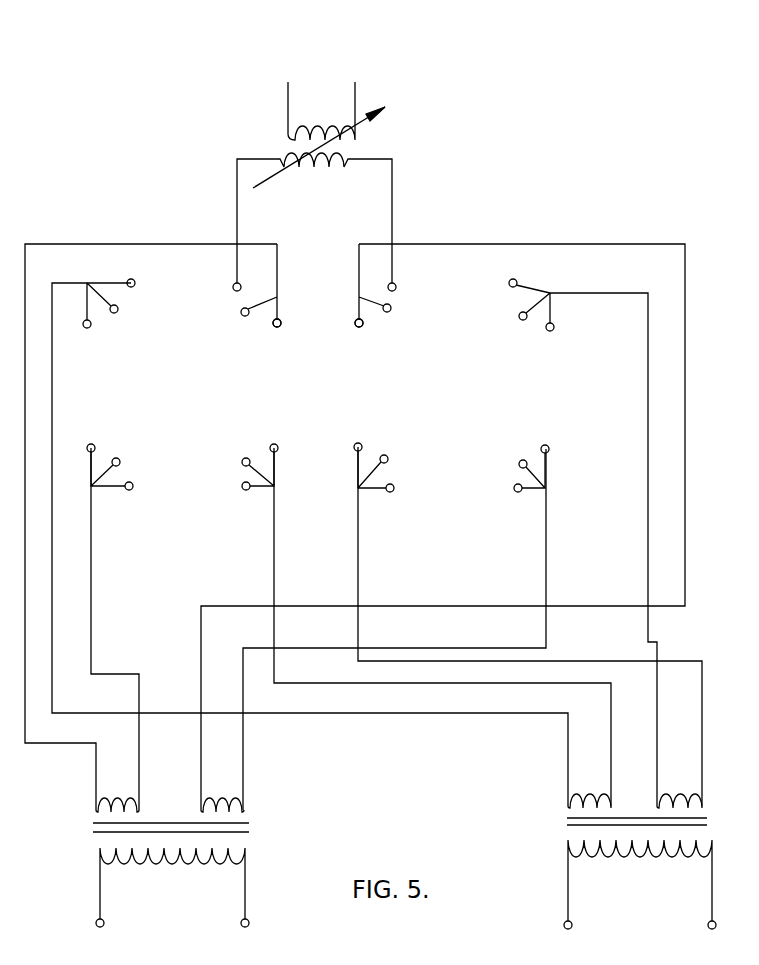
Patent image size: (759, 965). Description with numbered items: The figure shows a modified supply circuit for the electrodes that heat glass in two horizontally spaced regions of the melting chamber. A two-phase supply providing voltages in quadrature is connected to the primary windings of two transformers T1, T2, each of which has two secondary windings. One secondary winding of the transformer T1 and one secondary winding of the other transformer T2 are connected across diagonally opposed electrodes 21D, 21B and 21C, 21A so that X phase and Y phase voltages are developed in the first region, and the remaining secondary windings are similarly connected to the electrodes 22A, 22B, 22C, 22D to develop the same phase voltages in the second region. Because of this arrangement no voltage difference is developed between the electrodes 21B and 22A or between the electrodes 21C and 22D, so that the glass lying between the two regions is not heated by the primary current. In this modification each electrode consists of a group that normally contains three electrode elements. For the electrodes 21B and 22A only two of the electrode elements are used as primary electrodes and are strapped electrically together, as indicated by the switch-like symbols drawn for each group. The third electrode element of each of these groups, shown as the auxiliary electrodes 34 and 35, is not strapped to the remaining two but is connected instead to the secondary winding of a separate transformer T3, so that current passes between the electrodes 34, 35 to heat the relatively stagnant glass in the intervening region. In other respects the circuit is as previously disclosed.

The electrode 21A is at (122, 309).
The electrode 21B is at (248, 289).
The electrode 21C is at (251, 457).
The electrode 21D is at (124, 457).
The electrode 22A is at (392, 292).
The electrode 22B is at (513, 309).
The electrode 22C is at (524, 458).
The electrode 22D is at (384, 458).
The auxiliary electrode 34 is at (281, 323).
The auxiliary electrode 35 is at (359, 327).
The transformer T1 is at (143, 862).
The transformer T2 is at (616, 861).
The transformer T3 is at (314, 186).